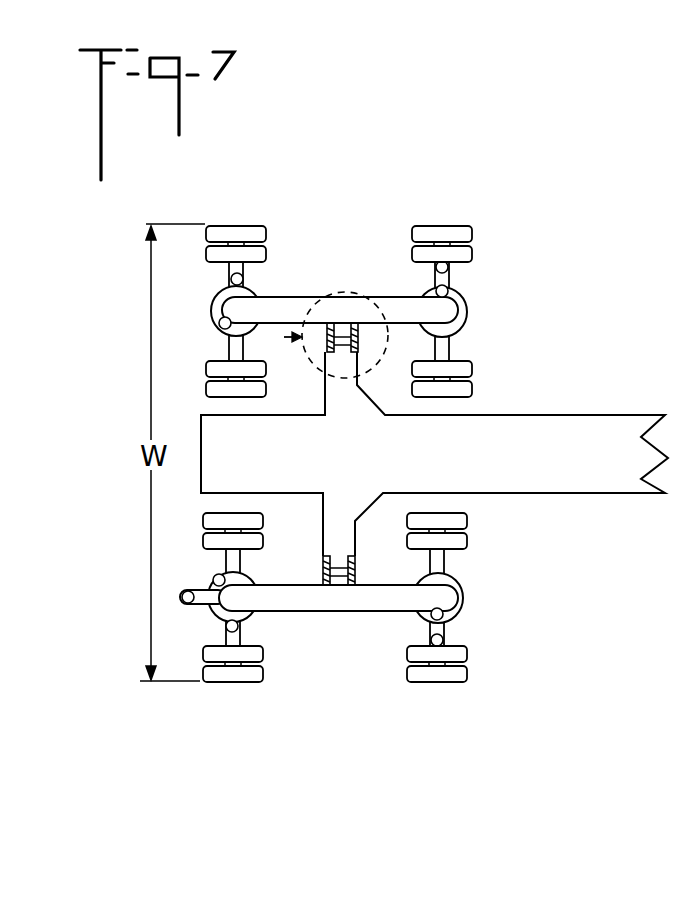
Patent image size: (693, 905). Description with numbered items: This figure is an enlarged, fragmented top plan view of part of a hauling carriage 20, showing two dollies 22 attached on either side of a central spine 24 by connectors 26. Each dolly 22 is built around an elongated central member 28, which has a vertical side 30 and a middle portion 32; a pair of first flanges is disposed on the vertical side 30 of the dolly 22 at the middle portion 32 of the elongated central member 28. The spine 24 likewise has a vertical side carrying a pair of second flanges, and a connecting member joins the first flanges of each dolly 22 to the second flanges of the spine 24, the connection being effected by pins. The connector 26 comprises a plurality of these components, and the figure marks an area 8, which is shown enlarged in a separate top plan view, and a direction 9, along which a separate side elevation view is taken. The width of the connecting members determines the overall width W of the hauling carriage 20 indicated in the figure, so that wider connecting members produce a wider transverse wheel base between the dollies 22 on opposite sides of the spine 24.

The hauling carriage 20 is at (306, 175).
The dolly 22 is at (346, 242).
The spine 24 is at (565, 455).
The connector 26 is at (333, 345).
The elongated central member 28 is at (436, 343).
The vertical side 30 is at (398, 328).
The middle portion 32 is at (348, 316).
The area 8 is at (333, 294).
The direction 9 is at (281, 339).